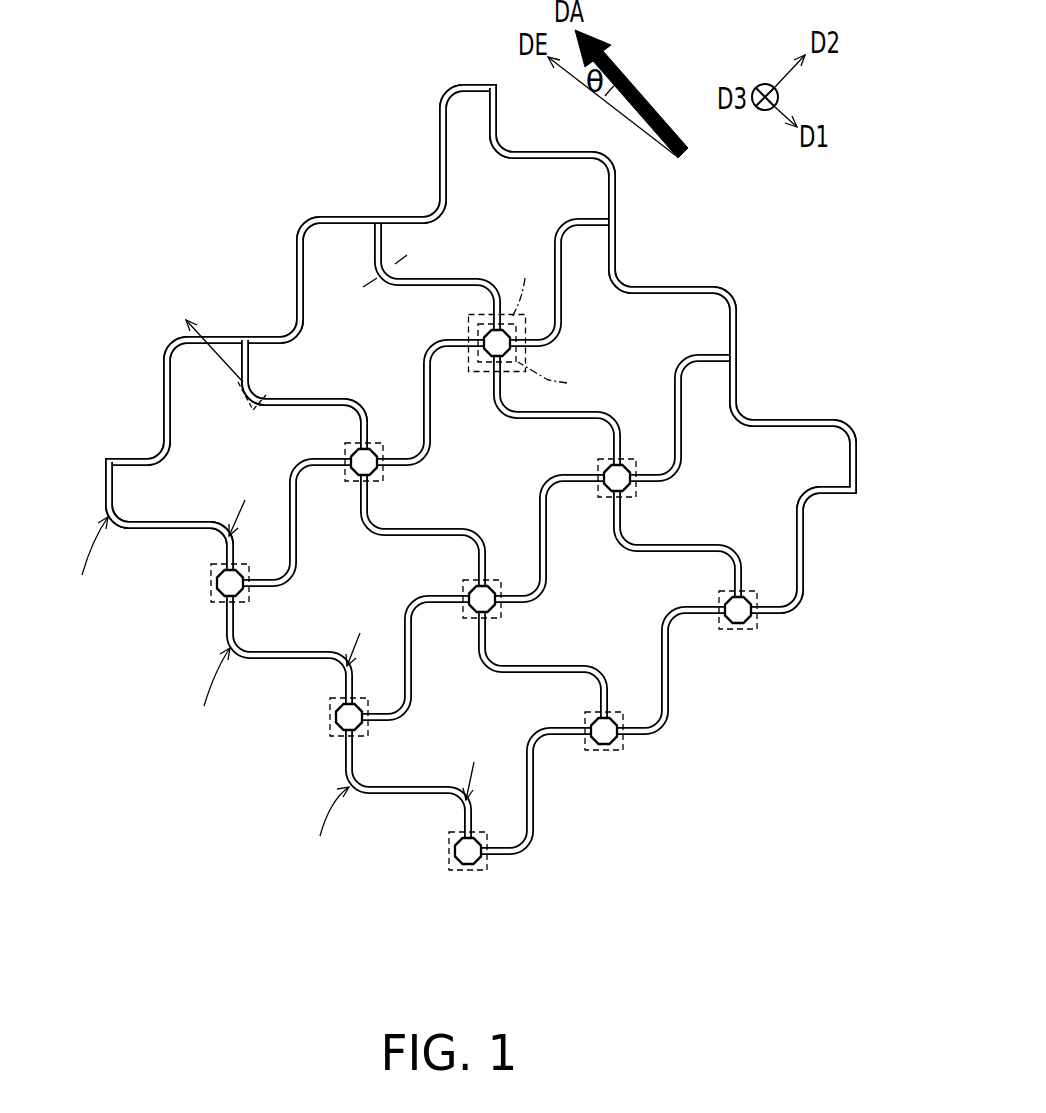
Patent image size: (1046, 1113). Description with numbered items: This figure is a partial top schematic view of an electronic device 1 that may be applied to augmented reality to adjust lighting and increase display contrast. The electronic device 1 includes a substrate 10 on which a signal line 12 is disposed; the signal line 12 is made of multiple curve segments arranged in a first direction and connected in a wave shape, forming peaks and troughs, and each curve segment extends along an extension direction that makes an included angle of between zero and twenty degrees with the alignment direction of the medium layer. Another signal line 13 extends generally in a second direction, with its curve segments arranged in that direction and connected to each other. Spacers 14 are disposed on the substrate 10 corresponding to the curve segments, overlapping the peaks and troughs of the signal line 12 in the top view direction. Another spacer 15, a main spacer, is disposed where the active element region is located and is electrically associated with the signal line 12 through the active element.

The electronic device 1 is at (479, 445).
The substrate 10 is at (479, 444).
The signal line 12 is at (492, 86).
The signal line 13 is at (444, 106).
The spacer 14 is at (258, 398).
The spacer 15 is at (492, 352).